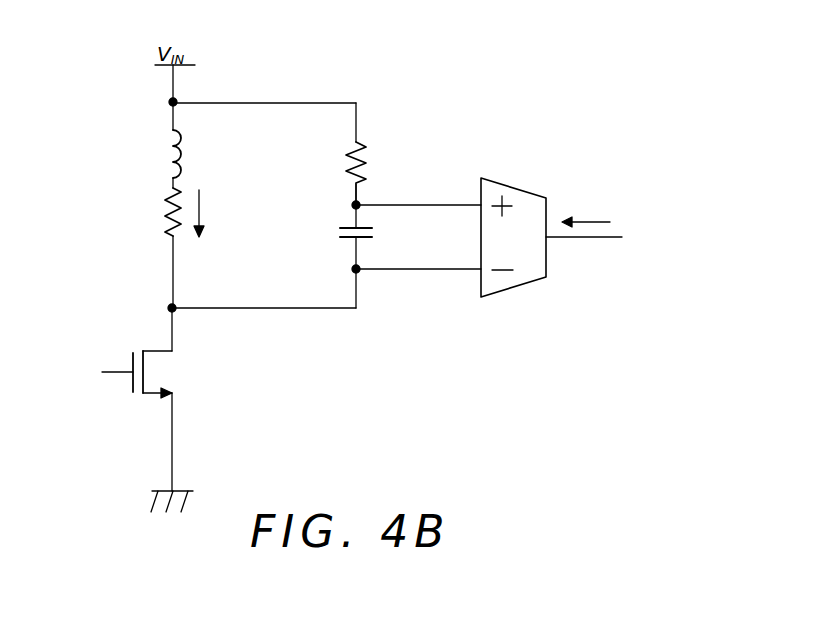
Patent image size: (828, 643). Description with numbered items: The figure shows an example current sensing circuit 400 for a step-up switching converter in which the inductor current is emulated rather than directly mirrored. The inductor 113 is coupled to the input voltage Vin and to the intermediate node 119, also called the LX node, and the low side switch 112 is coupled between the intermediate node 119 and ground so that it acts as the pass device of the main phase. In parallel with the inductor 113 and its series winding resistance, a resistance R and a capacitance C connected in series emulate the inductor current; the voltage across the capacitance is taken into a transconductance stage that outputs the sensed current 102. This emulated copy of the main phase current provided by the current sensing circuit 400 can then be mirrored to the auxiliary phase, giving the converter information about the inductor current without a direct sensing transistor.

The current sensing circuit 400 is at (448, 112).
The sensed current 102 is at (620, 190).
The inductor 113 is at (130, 147).
The intermediate node 119 is at (177, 313).
The low side switch 112 is at (168, 367).